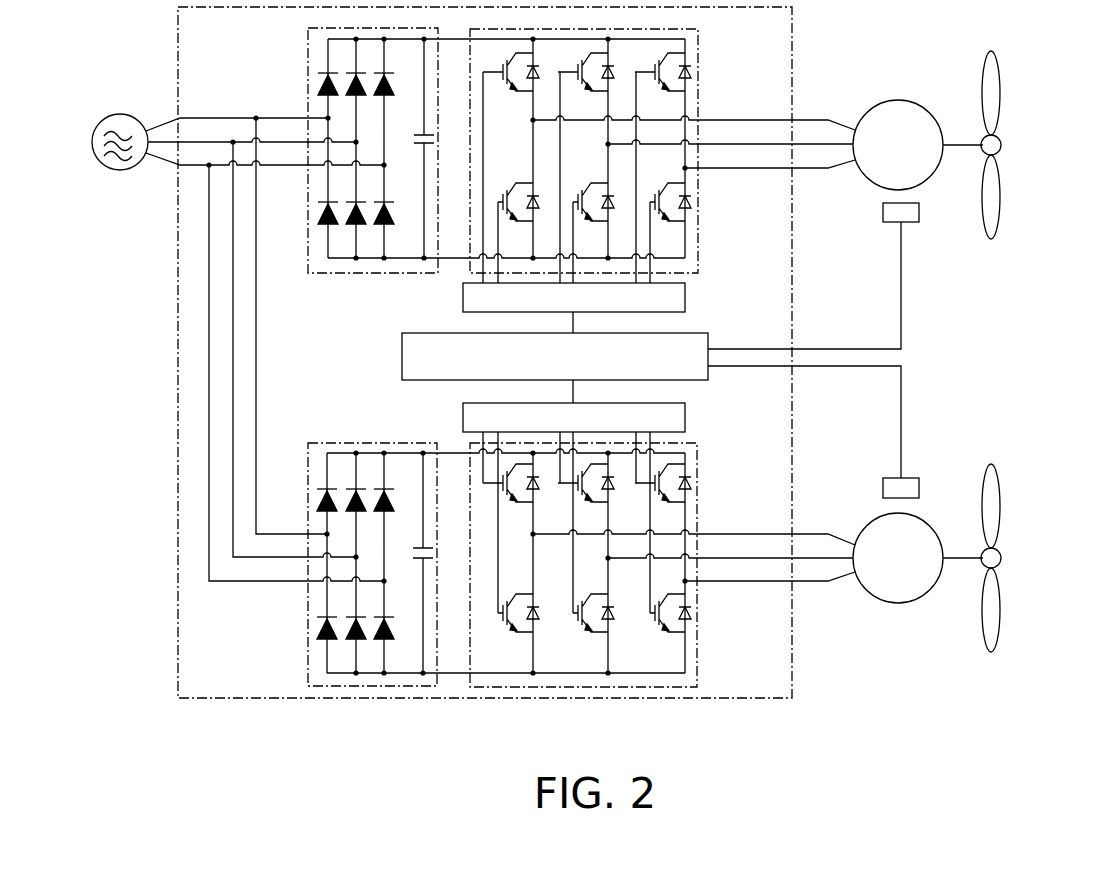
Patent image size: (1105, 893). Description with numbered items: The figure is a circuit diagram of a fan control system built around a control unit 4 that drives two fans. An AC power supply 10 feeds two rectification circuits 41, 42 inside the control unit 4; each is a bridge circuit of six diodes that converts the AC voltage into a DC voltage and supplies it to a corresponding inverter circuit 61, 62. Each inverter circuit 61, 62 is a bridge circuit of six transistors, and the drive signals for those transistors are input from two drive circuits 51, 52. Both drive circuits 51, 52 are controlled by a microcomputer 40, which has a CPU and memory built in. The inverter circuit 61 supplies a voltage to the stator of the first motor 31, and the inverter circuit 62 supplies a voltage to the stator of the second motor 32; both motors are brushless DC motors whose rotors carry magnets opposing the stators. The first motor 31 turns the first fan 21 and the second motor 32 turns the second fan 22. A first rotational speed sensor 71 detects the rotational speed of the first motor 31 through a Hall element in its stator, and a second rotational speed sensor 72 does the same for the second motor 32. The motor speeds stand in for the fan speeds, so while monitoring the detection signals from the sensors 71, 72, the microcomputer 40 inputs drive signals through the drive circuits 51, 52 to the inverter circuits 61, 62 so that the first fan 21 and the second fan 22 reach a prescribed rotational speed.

The control unit 4 is at (176, 290).
The power supply 10 is at (108, 118).
The first fan 21 is at (992, 82).
The second fan 22 is at (993, 628).
The first motor 31 is at (880, 112).
The second motor 32 is at (900, 594).
The microcomputer 40 is at (410, 356).
The rectification circuit 41 is at (308, 60).
The rectification circuit 42 is at (308, 660).
The drive circuit 51 is at (675, 298).
The drive circuit 52 is at (670, 421).
The inverter circuit 61 is at (698, 80).
The inverter circuit 62 is at (697, 636).
The first rotational speed sensor 71 is at (907, 218).
The second rotational speed sensor 72 is at (907, 488).